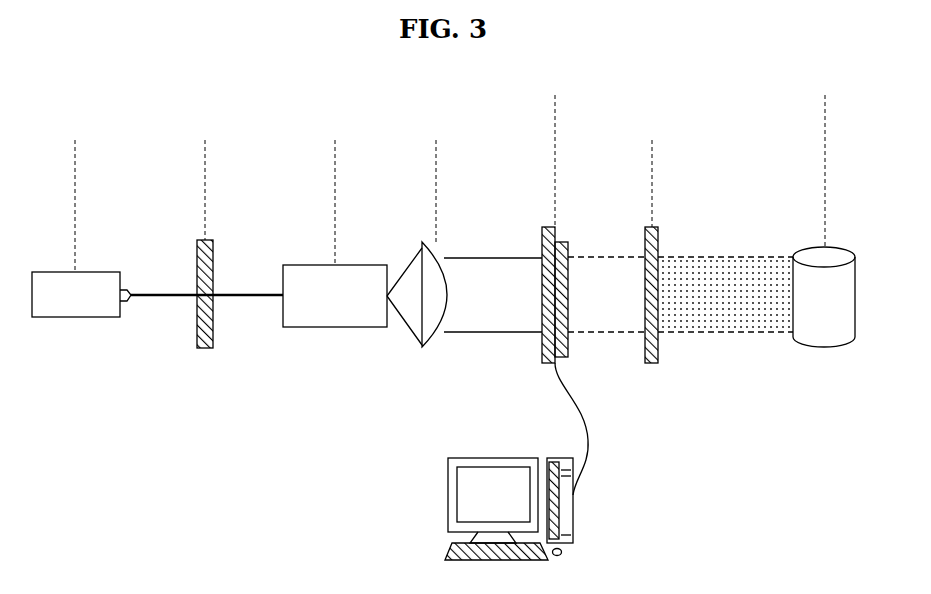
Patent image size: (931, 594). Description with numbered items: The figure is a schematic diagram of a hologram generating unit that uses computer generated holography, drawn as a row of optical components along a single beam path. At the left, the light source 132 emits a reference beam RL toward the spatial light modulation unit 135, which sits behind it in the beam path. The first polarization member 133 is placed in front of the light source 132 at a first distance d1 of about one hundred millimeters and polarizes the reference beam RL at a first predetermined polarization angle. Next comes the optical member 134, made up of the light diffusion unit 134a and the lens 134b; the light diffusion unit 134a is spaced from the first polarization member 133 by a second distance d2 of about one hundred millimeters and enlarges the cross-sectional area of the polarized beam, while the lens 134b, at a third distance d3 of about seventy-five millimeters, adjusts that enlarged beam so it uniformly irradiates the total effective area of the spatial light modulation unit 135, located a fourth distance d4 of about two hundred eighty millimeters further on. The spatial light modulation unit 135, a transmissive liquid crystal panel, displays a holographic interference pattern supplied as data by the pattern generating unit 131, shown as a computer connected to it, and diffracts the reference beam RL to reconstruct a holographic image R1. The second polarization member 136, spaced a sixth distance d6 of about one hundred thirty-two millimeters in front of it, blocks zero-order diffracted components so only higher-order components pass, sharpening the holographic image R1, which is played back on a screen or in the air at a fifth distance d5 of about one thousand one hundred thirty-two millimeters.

The pattern generating unit 131 is at (598, 498).
The light source 132 is at (75, 317).
The first polarization member 133 is at (205, 348).
The optical member 134 is at (366, 351).
The light diffusion unit 134a is at (335, 327).
The lens 134b is at (426, 329).
The spatial light modulation unit 135 is at (568, 350).
The second polarization member 136 is at (652, 363).
The holographic image R1 is at (825, 347).
The reference beam RL is at (167, 292).
The first distance d1 is at (77, 160).
The second distance d2 is at (207, 160).
The third distance d3 is at (434, 160).
The fourth distance d4 is at (553, 160).
The fifth distance d5 is at (557, 114).
The sixth distance d6 is at (557, 160).